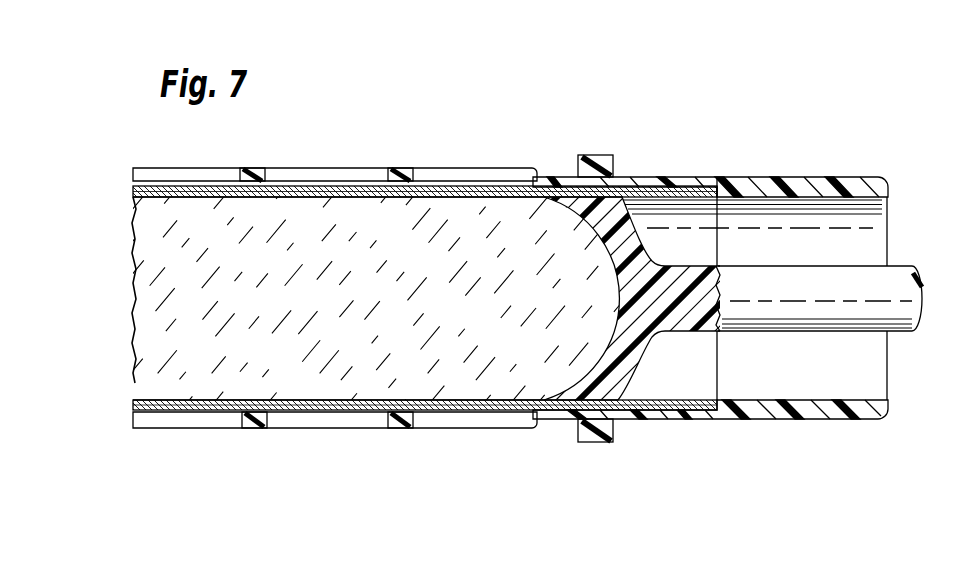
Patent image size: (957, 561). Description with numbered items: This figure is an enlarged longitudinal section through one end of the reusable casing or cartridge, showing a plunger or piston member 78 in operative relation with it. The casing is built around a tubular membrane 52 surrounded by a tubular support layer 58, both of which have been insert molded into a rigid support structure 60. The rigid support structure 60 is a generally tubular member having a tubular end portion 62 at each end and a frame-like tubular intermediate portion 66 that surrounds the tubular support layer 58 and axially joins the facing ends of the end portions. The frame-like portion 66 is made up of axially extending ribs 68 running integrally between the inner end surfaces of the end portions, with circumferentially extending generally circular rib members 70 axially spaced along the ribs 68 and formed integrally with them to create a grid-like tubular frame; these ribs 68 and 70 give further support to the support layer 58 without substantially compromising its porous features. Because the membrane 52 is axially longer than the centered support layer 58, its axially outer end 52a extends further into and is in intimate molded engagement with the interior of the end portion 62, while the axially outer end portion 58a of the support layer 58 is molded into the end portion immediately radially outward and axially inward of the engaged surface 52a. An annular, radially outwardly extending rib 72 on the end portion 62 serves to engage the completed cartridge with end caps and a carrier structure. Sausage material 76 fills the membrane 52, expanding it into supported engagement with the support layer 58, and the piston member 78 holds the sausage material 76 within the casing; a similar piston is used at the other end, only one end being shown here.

The tubular membrane 52 is at (425, 197).
The axially outer end of the tubular membrane 52a is at (688, 189).
The tubular support layer 58 is at (493, 179).
The axially outer end portion of the tubular support layer 58a is at (621, 179).
The rigid support structure 60 is at (352, 136).
The tubular end portion 62 is at (810, 177).
The frame-like tubular intermediate portion 66 is at (400, 164).
The axially extending ribs 68 is at (310, 172).
The circumferentially extending circular rib members 70 is at (256, 167).
The annular radially outwardly extending rib 72 is at (598, 155).
The sausage material 76 is at (415, 330).
The plunger or piston member 78 is at (737, 263).